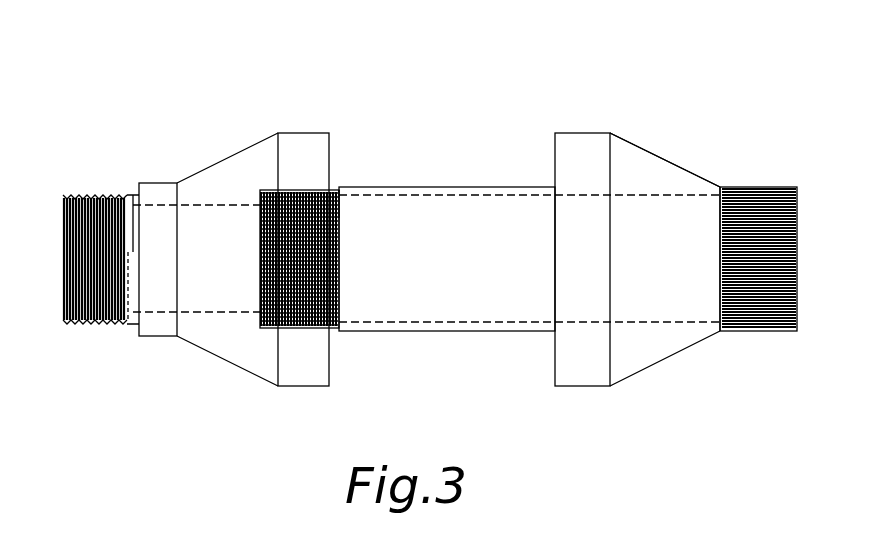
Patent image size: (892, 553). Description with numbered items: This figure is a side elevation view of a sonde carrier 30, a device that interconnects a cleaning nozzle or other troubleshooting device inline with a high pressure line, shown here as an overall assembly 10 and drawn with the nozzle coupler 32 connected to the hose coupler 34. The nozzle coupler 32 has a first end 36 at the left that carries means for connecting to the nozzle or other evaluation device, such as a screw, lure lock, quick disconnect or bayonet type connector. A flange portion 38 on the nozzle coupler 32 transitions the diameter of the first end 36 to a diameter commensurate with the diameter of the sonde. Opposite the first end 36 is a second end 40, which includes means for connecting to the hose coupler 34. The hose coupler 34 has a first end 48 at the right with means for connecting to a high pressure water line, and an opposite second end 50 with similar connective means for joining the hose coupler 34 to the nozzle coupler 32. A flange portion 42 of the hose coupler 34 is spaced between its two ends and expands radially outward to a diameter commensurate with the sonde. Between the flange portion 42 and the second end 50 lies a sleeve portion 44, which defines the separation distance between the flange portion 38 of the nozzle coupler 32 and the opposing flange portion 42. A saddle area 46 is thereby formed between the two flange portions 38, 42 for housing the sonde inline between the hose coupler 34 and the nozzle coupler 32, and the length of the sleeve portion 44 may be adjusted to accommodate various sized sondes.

The pipe coupling assembly 10 is at (513, 70).
The sonde carrier 30 is at (628, 140).
The nozzle coupler 32 is at (225, 362).
The hose coupler 34 is at (682, 162).
The first end 36 is at (98, 196).
The flange portion 38 is at (300, 133).
The second end 40 is at (310, 328).
The flange portion 42 is at (647, 357).
The sleeve portion 44 is at (527, 322).
The saddle area 46 is at (508, 152).
The first end 48 is at (772, 180).
The second end 50 is at (340, 218).